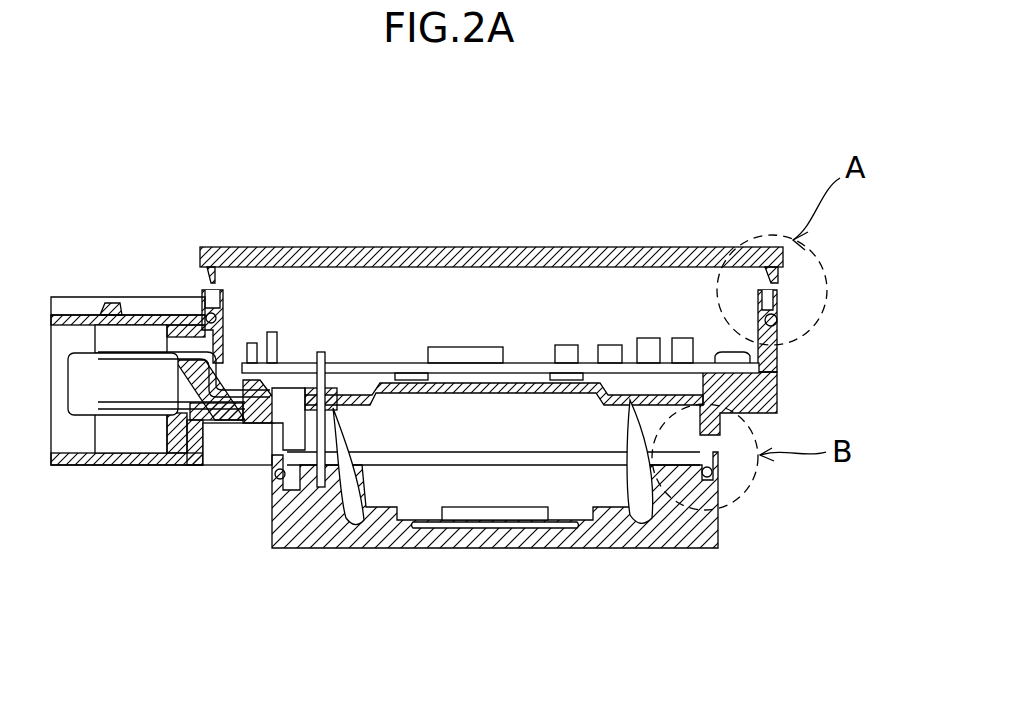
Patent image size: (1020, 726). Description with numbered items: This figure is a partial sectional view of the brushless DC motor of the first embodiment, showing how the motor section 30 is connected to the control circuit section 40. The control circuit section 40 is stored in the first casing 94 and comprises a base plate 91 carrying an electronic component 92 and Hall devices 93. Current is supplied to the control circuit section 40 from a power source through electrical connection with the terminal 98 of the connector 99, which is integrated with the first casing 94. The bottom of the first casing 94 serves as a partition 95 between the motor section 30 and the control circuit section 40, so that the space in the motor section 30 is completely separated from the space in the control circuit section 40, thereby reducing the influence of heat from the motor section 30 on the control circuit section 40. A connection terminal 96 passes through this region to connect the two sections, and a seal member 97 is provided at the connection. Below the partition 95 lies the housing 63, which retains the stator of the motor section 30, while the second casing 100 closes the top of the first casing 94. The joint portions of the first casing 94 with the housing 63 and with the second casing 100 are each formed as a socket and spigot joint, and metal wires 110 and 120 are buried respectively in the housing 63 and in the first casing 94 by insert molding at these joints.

The motor section 30 is at (341, 570).
The control circuit section 40 is at (222, 218).
The housing 63 is at (680, 548).
The base plate 91 is at (540, 363).
The electronic component 92 is at (465, 347).
The Hall device 93 is at (410, 373).
The first casing 94 is at (777, 392).
The partition 95 is at (630, 515).
The connection terminal 96 is at (313, 489).
The seal member 97 is at (333, 408).
The terminal 98 is at (130, 355).
The connector 99 is at (113, 467).
The second casing 100 is at (680, 247).
The metal wire 110 is at (276, 478).
The metal wire 120 is at (207, 316).